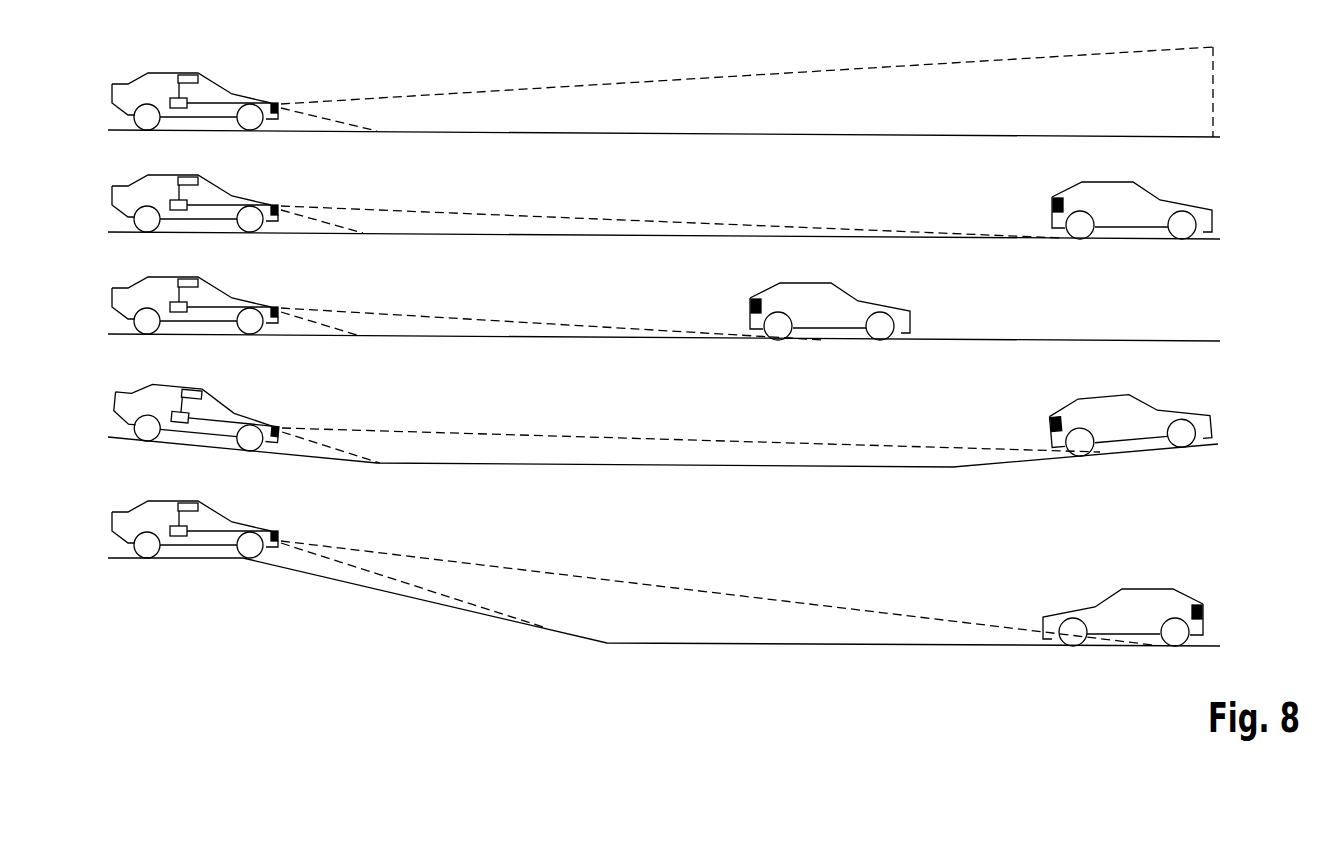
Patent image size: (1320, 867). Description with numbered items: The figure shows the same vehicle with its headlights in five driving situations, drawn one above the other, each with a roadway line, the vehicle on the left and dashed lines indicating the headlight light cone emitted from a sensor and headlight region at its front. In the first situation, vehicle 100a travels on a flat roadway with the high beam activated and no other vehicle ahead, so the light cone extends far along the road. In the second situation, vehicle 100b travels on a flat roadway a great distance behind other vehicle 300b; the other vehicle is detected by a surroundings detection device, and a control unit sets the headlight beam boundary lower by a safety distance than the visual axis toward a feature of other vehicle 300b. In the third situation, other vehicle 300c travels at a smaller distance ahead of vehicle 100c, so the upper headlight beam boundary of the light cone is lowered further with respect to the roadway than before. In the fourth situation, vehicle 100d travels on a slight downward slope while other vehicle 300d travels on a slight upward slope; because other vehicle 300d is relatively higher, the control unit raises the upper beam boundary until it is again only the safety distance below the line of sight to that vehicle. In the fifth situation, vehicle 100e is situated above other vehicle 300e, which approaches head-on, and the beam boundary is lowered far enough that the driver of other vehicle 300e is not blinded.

The vehicle 100a is at (112, 98).
The vehicle 100b is at (112, 200).
The vehicle 100c is at (112, 303).
The vehicle 100d is at (112, 407).
The vehicle 100e is at (112, 525).
The other vehicle 300b is at (1212, 210).
The other vehicle 300c is at (910, 311).
The other vehicle 300d is at (1211, 417).
The other vehicle 300e is at (1203, 620).